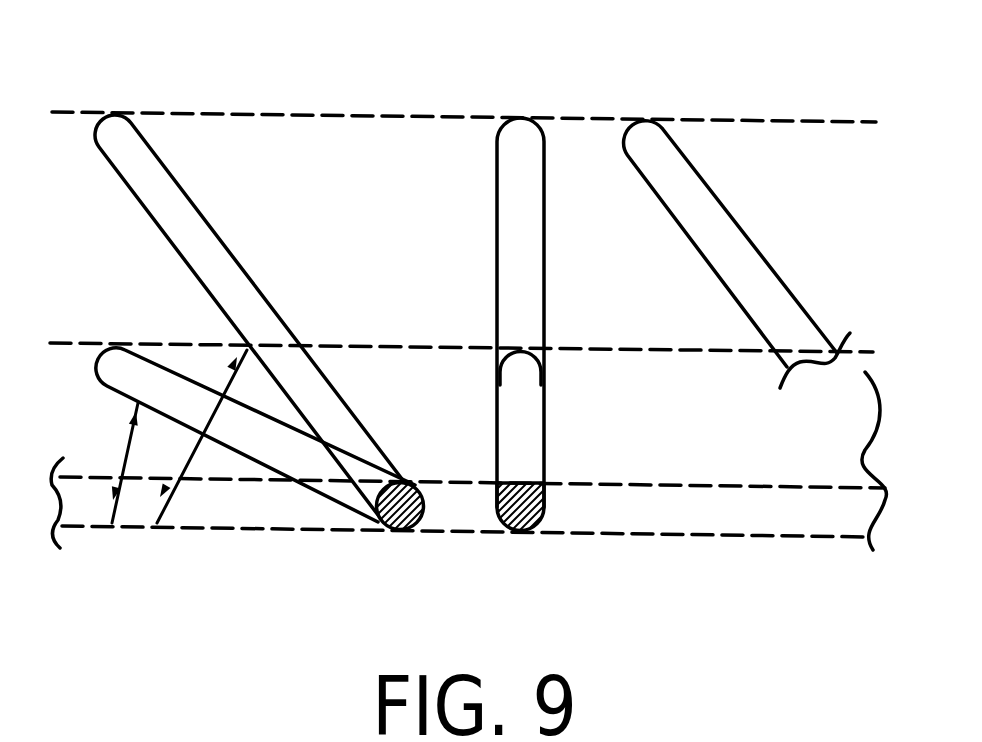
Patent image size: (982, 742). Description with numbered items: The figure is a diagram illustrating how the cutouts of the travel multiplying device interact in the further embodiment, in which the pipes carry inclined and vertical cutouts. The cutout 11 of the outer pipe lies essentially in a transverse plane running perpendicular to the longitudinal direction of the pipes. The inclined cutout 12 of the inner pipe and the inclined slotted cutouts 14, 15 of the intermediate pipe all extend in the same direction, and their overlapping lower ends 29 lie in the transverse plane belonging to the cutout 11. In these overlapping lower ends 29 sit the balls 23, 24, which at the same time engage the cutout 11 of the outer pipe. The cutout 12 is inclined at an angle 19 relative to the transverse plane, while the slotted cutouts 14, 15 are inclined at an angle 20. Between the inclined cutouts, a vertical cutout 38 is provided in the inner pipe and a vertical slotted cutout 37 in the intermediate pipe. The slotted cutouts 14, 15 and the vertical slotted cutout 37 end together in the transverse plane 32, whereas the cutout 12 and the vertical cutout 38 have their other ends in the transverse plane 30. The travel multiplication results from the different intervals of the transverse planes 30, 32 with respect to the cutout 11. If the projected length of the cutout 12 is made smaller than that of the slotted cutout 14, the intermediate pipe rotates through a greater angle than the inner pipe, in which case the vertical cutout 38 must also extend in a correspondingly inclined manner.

The cutout 11 is at (712, 525).
The cutout 12 is at (263, 452).
The slotted cutout 14 is at (202, 232).
The slotted cutout 15 is at (727, 228).
The angle 19 is at (122, 460).
The angle 20 is at (172, 466).
The ball 23 is at (427, 513).
The ball 24 is at (523, 535).
The lower end 29 is at (405, 538).
The transverse plane 30 is at (66, 340).
The transverse plane 32 is at (70, 111).
The vertical slotted cutout 37 is at (523, 218).
The vertical cutout 38 is at (518, 405).